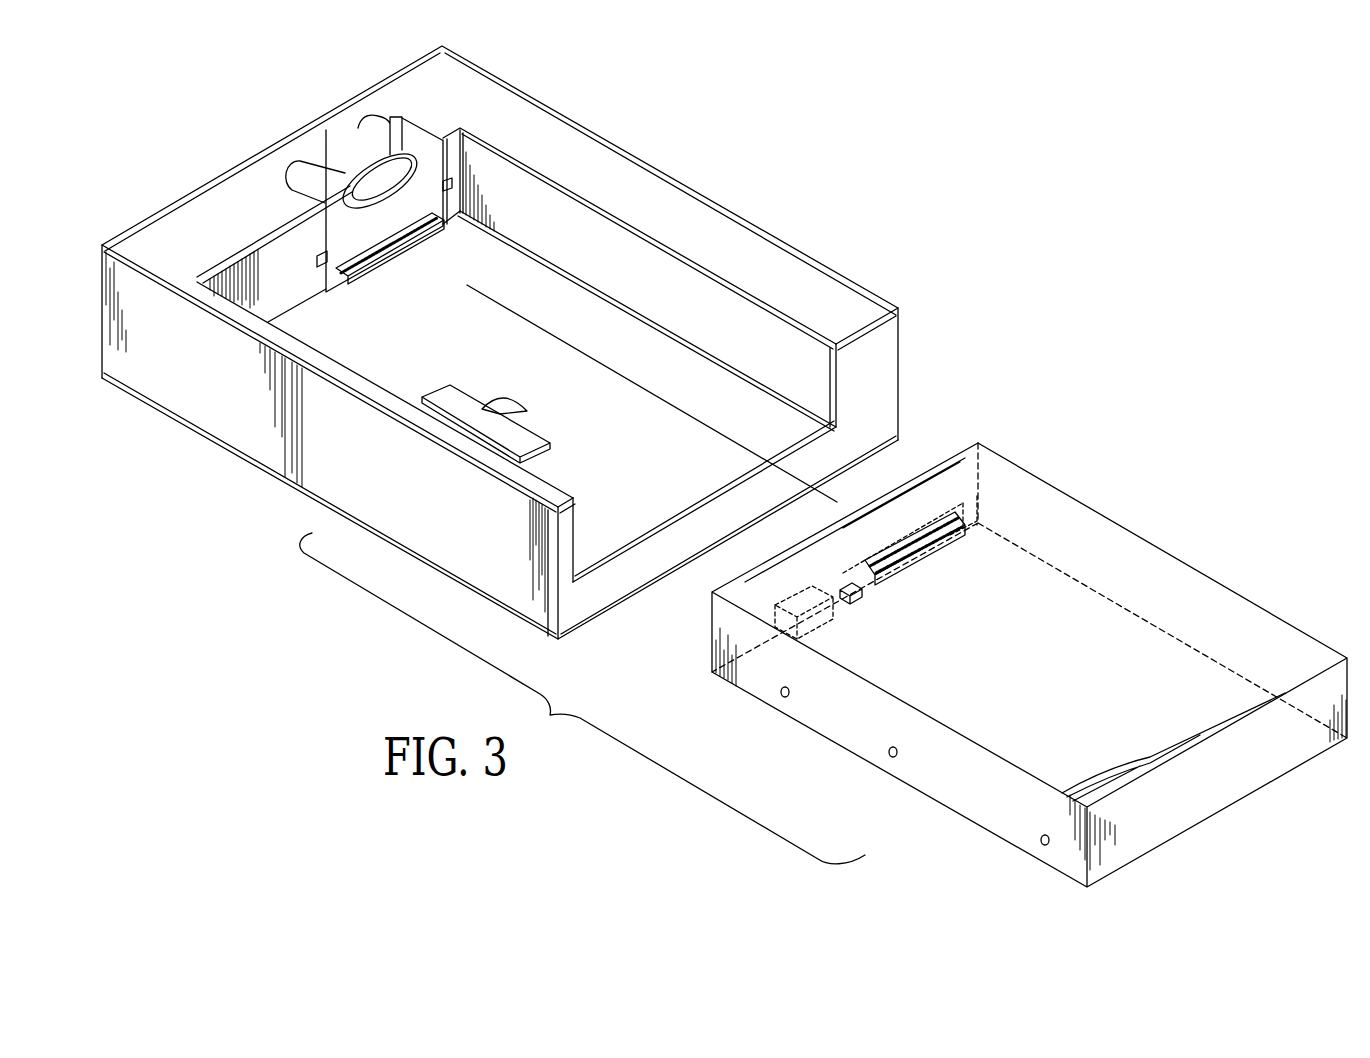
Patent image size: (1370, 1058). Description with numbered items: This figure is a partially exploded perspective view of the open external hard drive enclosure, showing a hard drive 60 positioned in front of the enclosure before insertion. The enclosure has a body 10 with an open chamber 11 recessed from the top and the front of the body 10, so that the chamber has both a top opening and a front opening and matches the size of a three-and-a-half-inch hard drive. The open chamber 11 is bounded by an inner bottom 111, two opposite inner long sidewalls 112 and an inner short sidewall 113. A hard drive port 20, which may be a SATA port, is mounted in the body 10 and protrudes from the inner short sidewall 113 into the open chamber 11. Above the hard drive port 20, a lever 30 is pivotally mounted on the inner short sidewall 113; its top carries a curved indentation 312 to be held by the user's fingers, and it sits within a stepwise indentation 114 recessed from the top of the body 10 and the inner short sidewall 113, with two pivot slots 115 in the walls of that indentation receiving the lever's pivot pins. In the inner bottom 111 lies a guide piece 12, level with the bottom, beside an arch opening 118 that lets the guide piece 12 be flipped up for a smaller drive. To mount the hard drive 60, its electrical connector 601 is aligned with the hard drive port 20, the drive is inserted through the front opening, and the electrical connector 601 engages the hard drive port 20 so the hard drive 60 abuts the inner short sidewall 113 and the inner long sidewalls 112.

The body 10 is at (805, 248).
The open chamber 11 is at (655, 262).
The guide piece 12 is at (453, 386).
The hard drive port 20 is at (393, 258).
The lever 30 is at (398, 167).
The hard drive 60 is at (1029, 650).
The inner bottom 111 is at (595, 553).
The inner long sidewalls 112 is at (822, 370).
The inner short sidewall 113 is at (277, 253).
The stepwise indentation 114 is at (313, 165).
The pivot slots 115 is at (331, 262).
The arch opening 118 is at (518, 403).
The curved indentation 312 is at (373, 170).
The electrical connector 601 is at (932, 517).